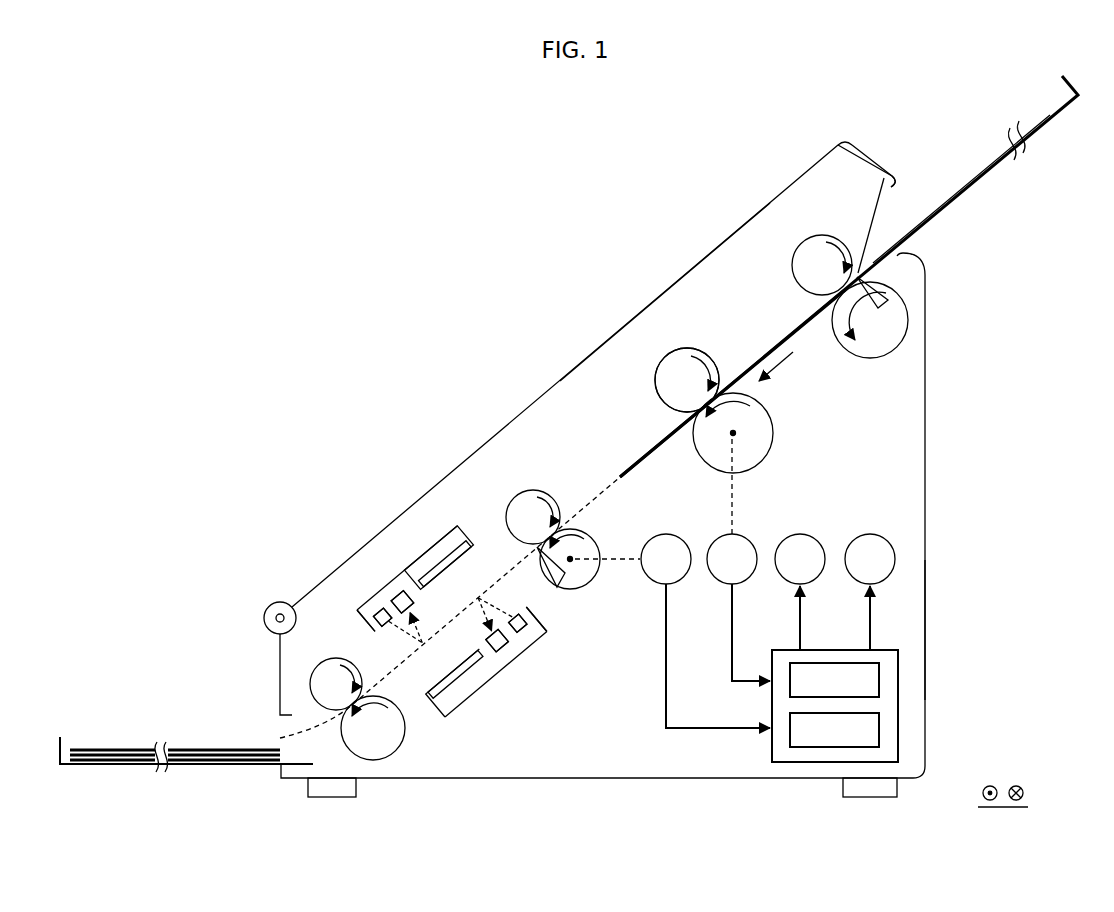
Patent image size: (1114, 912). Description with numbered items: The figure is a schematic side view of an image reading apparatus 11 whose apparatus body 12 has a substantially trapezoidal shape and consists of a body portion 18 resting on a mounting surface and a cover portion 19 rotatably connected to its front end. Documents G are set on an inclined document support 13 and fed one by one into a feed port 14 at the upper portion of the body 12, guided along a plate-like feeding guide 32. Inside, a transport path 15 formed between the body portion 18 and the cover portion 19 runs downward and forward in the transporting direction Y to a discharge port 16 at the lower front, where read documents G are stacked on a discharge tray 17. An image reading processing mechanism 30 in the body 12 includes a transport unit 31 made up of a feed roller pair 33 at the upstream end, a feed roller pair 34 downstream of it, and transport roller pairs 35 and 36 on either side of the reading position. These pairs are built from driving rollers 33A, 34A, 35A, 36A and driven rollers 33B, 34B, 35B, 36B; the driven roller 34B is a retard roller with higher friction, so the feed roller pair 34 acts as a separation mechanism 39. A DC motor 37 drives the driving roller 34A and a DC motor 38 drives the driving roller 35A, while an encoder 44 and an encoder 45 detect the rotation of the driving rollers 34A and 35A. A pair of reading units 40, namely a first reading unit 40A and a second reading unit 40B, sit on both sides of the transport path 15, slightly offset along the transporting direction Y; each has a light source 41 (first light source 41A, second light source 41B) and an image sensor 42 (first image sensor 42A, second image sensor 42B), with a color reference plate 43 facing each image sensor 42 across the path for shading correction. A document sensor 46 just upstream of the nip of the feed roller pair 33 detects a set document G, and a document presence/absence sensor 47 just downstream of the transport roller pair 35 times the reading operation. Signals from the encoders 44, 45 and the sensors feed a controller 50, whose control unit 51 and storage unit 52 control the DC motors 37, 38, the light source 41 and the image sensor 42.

The image reading apparatus 11 is at (385, 290).
The apparatus body 12 is at (927, 547).
The document support 13 is at (1000, 168).
The feed port 14 is at (894, 182).
The transport path 15 is at (598, 495).
The discharge port 16 is at (280, 718).
The discharge tray 17 is at (184, 766).
The body portion 18 is at (927, 627).
The cover portion 19 is at (600, 346).
The image reading processing mechanism 30 is at (554, 714).
The transport unit 31 is at (809, 441).
The feeding guide 32 is at (874, 208).
The feed roller pair 33 is at (906, 320).
The driving roller 33A is at (876, 358).
The driven roller 33B is at (790, 250).
The feed roller pair 34 is at (770, 455).
The driving roller 34A is at (700, 462).
The driven roller 34B is at (655, 370).
The transport roller pair 35 is at (595, 541).
The driving roller 35A is at (595, 580).
The driven roller 35B is at (533, 490).
The transport roller pair 36 is at (397, 749).
The driving roller 36A is at (375, 761).
The driven roller 36B is at (310, 682).
The DC motor 37 is at (882, 537).
The DC motor 38 is at (812, 537).
The separation mechanism 39 is at (663, 350).
The reading unit 40 is at (449, 621).
The first reading unit 40A is at (500, 660).
The second reading unit 40B is at (380, 597).
The light source 41 is at (452, 619).
The first light source 41A is at (538, 637).
The second light source 41B is at (360, 605).
The image sensor 42 is at (449, 620).
The first image sensor 42A is at (521, 634).
The second image sensor 42B is at (391, 596).
The color reference plate 43 is at (445, 568).
The encoder 44 is at (749, 537).
The encoder 45 is at (668, 534).
The document sensor 46 is at (890, 285).
The document presence/absence sensor 47 is at (558, 588).
The controller 50 is at (898, 705).
The control unit 51 is at (880, 672).
The storage unit 52 is at (880, 738).
The document G is at (948, 195).
The transporting direction Y is at (779, 374).